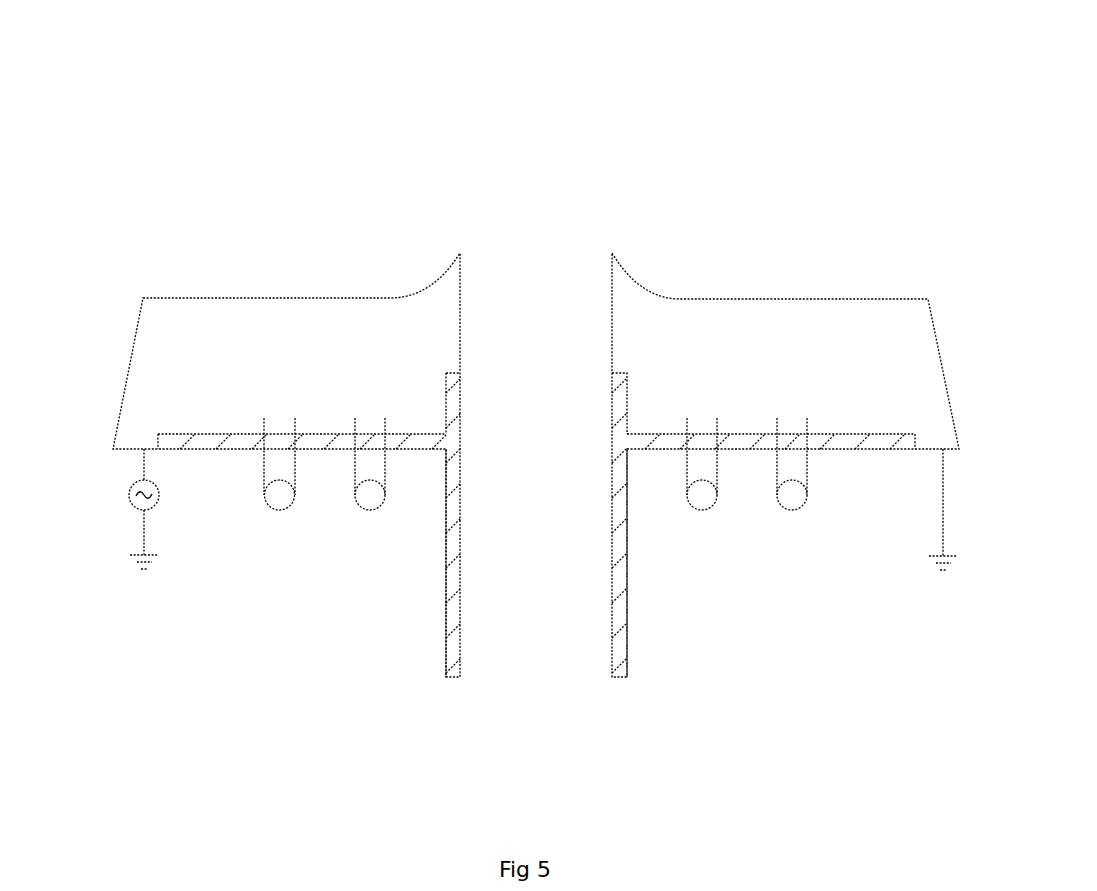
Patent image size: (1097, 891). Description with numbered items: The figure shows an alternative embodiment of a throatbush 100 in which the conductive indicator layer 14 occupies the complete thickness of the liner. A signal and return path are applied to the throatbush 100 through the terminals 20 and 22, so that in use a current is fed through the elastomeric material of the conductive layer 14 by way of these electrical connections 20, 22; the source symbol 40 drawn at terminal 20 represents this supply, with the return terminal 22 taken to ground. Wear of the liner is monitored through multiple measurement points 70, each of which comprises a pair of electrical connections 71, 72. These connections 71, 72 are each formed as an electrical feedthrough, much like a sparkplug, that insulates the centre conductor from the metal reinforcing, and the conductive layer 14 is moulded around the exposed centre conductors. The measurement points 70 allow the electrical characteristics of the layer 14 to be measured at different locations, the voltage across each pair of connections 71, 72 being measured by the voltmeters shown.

The throatbush 100 is at (688, 112).
The conductive indicator layer 14 is at (346, 309).
The terminal 20 is at (145, 470).
The terminal 22 is at (943, 508).
The AC voltage source 40 is at (128, 490).
The measurement point 70 is at (287, 512).
The electrical connection 71 is at (262, 463).
The electrical connection 72 is at (292, 470).